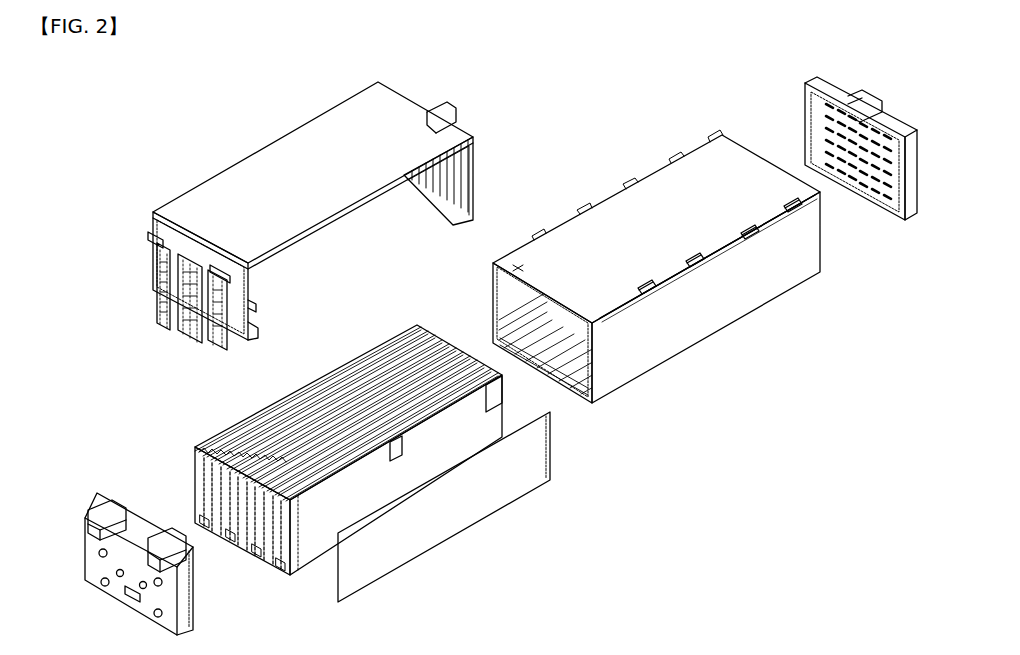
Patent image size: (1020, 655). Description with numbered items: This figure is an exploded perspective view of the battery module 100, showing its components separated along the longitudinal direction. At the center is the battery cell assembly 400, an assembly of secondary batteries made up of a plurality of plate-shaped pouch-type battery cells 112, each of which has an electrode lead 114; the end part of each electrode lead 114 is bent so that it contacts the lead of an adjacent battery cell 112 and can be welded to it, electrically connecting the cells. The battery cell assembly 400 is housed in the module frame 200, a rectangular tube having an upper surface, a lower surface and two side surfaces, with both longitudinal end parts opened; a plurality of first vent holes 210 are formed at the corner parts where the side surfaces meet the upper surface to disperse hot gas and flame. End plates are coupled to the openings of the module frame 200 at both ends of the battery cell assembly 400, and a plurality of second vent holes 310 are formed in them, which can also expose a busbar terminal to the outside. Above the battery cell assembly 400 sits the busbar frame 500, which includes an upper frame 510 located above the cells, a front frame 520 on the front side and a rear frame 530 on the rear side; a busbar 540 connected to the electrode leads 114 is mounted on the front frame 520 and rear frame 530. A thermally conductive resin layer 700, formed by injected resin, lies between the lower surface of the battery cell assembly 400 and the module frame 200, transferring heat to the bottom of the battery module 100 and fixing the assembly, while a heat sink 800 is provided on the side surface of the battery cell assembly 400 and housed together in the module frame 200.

The battery module 100 is at (78, 135).
The battery cell 112 is at (305, 548).
The electrode lead 114 is at (273, 574).
The module frame 200 is at (656, 309).
The first vent hole 210 is at (750, 233).
The second vent hole 310 is at (885, 140).
The battery cell assembly 400 is at (313, 476).
The busbar frame 500 is at (352, 215).
The upper frame 510 is at (388, 107).
The front frame 520 is at (253, 293).
The rear frame 530 is at (472, 175).
The busbar 540 is at (183, 312).
The thermally conductive resin layer 700 is at (568, 393).
The heat sink 800 is at (468, 508).